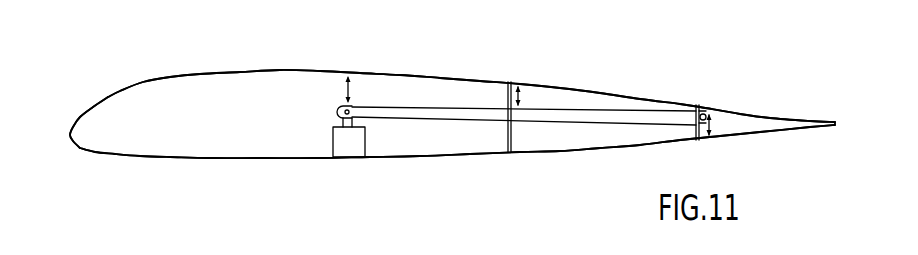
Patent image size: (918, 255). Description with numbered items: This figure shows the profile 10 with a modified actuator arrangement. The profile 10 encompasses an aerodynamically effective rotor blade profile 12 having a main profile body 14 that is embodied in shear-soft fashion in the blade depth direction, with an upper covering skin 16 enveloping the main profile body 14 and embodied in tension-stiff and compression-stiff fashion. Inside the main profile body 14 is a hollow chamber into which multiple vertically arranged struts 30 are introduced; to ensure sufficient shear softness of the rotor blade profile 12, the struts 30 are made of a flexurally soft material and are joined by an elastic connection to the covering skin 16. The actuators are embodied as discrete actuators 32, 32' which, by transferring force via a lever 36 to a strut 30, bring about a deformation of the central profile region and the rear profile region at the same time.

The profile 10 is at (94, 49).
The rotor blade profile 12 is at (134, 68).
The main profile body 14 is at (257, 72).
The upper covering skin 16 is at (227, 158).
The strut 30 is at (507, 100).
The discrete actuator 32 is at (371, 145).
The discrete actuator 32' is at (344, 116).
The lever 36 is at (553, 117).